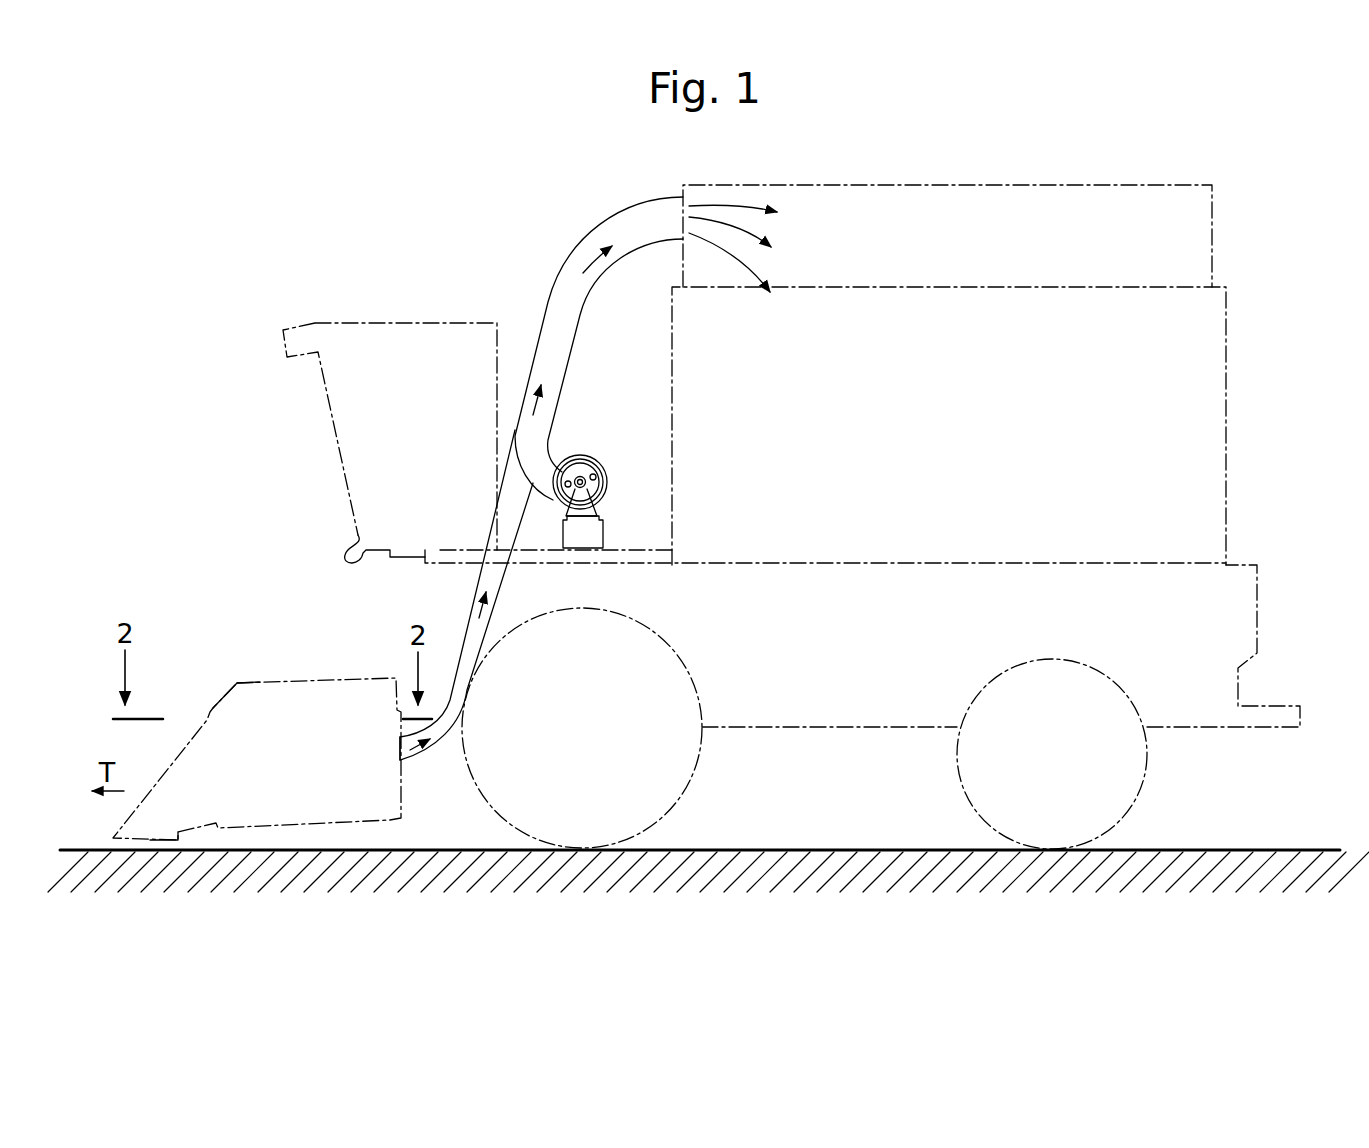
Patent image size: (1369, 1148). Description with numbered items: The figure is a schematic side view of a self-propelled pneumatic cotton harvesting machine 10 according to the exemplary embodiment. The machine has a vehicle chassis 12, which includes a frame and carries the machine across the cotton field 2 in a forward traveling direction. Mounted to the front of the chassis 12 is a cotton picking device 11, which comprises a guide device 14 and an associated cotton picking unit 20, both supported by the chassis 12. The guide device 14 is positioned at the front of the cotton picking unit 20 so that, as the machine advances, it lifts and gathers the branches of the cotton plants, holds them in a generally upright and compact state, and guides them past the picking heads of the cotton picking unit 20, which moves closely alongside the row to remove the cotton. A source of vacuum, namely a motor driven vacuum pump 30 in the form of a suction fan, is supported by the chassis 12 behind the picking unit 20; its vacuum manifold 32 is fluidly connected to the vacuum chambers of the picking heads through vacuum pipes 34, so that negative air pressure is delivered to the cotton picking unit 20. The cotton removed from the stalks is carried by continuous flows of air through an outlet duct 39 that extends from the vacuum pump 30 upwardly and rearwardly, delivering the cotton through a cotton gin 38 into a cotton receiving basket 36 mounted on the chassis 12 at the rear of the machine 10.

The cotton field 2 is at (1245, 847).
The cotton harvesting machine 10 is at (417, 279).
The cotton picking device 11 is at (219, 687).
The vehicle chassis 12 is at (811, 736).
The guide device 14 is at (164, 855).
The cotton picking unit 20 is at (290, 672).
The vacuum pump 30 is at (604, 447).
The vacuum manifold 32 is at (521, 526).
The vacuum pipes 34 is at (430, 753).
The cotton receiving basket 36 is at (1236, 406).
The cotton gin 38 is at (1213, 238).
The outlet duct 39 is at (567, 255).